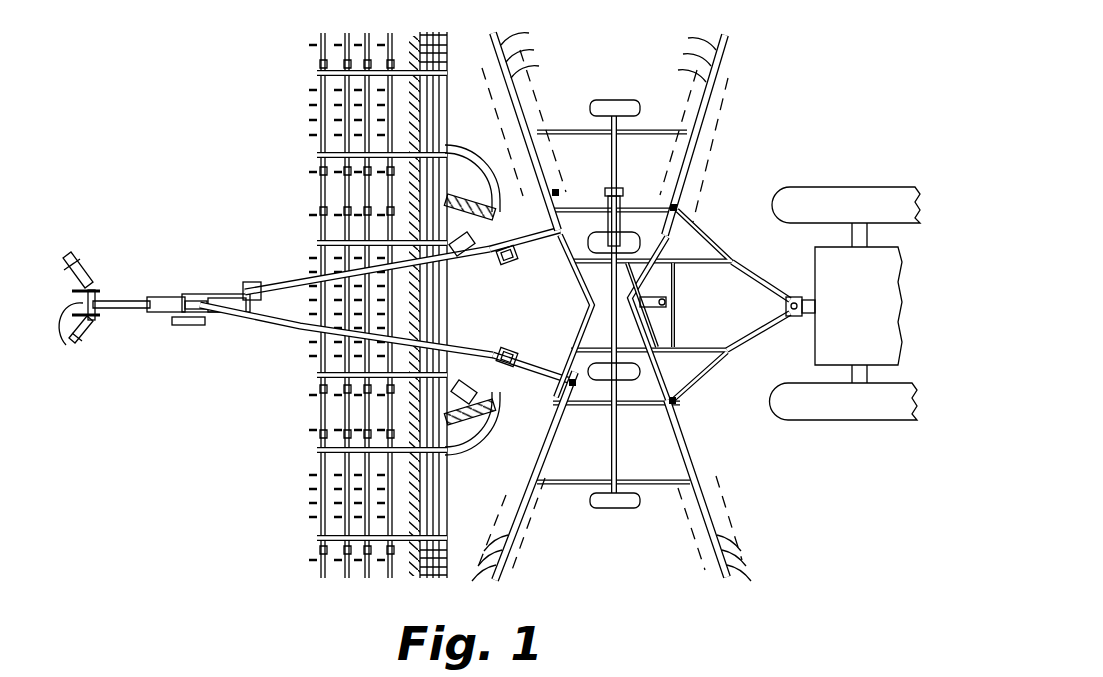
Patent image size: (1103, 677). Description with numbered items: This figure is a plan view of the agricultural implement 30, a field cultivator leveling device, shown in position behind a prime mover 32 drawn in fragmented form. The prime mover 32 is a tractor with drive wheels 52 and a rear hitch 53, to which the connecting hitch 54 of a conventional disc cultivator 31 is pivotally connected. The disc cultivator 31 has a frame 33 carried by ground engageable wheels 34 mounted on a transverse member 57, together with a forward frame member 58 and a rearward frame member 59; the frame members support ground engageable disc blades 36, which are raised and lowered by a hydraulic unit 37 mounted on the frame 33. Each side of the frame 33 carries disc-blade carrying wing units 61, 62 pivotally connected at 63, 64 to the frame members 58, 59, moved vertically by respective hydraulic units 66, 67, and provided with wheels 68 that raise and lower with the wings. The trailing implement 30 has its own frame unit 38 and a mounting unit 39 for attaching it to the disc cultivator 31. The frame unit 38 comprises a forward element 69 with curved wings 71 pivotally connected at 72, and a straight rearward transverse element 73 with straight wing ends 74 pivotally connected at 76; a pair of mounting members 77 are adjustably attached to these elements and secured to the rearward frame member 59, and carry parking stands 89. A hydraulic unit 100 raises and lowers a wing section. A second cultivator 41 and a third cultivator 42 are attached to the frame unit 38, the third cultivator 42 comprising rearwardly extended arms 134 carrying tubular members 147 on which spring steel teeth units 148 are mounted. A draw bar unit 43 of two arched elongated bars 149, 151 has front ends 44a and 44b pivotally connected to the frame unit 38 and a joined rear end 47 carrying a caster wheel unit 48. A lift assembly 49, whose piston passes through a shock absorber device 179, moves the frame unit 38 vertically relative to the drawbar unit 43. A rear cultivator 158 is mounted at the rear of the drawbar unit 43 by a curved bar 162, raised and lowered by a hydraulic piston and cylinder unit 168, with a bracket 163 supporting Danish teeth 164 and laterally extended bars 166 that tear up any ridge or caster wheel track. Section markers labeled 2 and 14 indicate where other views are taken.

The agricultural implement 30 is at (434, 338).
The disc cultivator 31 is at (645, 311).
The prime mover 32 is at (845, 292).
The frame 33 is at (649, 307).
The ground engageable wheels 34 is at (620, 300).
The disc blades 36 is at (508, 45).
The hydraulic unit 37 is at (678, 297).
The frame unit 38 is at (508, 80).
The mounting unit 39 is at (560, 272).
The second cultivator 41 is at (426, 30).
The third cultivator 42 is at (340, 314).
The draw bar unit 43 is at (292, 265).
The front end 44a is at (492, 292).
The front end 44b is at (486, 323).
The rear end 47 is at (254, 282).
The caster wheel unit 48 is at (196, 286).
The lift assembly 49 is at (460, 304).
The drive wheels 52 is at (880, 408).
The rear hitch 53 is at (795, 318).
The connecting hitch 54 is at (762, 280).
The transverse member 57 is at (680, 322).
The forward frame member 58 is at (680, 210).
The rearward frame member 59 is at (528, 340).
The wing unit 61 is at (566, 95).
The wing unit 62 is at (682, 537).
The pivotal connection 63 is at (558, 196).
The pivotal connection 64 is at (690, 415).
The hydraulic unit 66 is at (610, 218).
The hydraulic unit 67 is at (622, 412).
The wheels 68 is at (626, 100).
The forward element 69 is at (492, 294).
The curved wings 71 is at (482, 160).
The pivotal connection 72 is at (494, 200).
The rearward transverse element 73 is at (447, 323).
The wing ends 74 is at (443, 97).
The pivotal connection 76 is at (477, 145).
The mounting members 77 is at (553, 193).
The parking stands 89 is at (506, 348).
The hydraulic unit 100 is at (482, 175).
The arms 134 is at (320, 74).
The tubular member 147 is at (390, 33).
The spring steel teeth units 148 is at (320, 520).
The elongated bar 149 is at (290, 282).
The elongated bar 151 is at (263, 332).
The rear cultivator 158 is at (88, 264).
The curved bar 162 is at (134, 300).
The bracket 163 is at (80, 338).
The Danish teeth 164 is at (100, 325).
The bars 166 is at (78, 262).
The hydraulic piston and cylinder unit 168 is at (212, 318).
The shock absorber device 179 is at (412, 318).
The section line 2 is at (76, 513).
The section line 14 is at (107, 353).